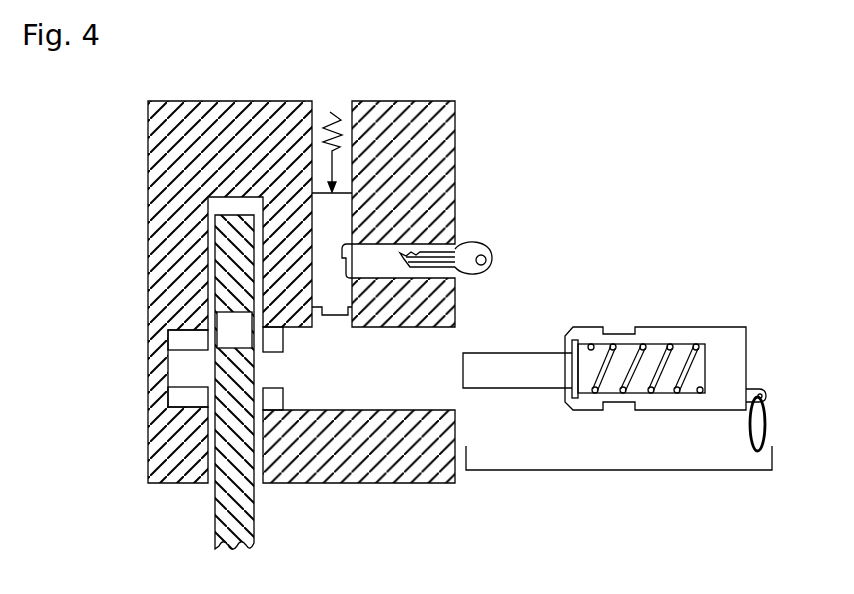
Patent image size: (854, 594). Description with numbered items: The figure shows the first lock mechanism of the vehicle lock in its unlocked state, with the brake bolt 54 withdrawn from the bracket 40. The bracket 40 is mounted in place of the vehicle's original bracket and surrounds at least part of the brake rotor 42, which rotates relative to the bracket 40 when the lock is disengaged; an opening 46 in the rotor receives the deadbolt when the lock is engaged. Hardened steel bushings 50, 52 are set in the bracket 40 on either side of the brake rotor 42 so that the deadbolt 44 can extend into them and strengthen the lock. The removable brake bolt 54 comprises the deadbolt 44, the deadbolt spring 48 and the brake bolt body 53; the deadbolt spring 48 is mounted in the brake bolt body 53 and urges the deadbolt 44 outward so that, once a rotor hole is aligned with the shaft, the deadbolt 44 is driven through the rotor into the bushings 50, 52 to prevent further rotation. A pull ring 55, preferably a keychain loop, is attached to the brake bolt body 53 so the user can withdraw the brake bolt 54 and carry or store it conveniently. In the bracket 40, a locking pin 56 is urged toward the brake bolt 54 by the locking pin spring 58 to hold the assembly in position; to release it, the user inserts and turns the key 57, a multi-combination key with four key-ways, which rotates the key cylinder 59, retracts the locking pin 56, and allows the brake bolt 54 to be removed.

The bracket 40 is at (170, 208).
The brake rotor 42 is at (237, 527).
The deadbolt 44 is at (528, 384).
The aperture in locking bolt 46 is at (230, 327).
The deadbolt spring 48 is at (693, 366).
The bushing 50 is at (274, 400).
The bushing 52 is at (178, 340).
The brake bolt body 53 is at (738, 392).
The brake bolt 54 is at (619, 475).
The pull ring 55 is at (766, 394).
The locking pin 56 is at (345, 229).
The key 57 is at (473, 250).
The locking pin spring 58 is at (336, 114).
The key cylinder 59 is at (407, 273).